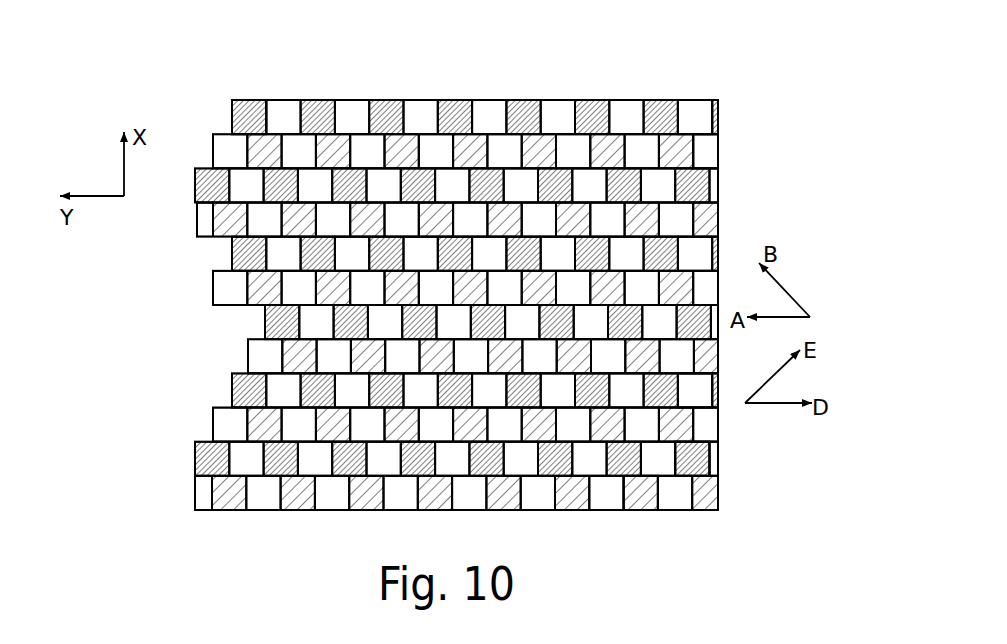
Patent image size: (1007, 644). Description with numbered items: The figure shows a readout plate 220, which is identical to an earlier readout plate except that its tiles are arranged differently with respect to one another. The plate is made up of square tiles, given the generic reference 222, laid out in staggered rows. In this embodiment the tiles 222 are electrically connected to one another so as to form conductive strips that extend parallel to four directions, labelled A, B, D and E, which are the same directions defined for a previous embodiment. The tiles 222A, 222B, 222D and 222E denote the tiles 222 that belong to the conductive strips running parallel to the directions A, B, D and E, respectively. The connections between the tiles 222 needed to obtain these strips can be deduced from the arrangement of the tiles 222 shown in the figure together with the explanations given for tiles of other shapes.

The readout plate 220 is at (492, 307).
The square tile 222 is at (245, 116).
The tile of conductive strip parallel to direction A 222A is at (696, 118).
The tile of conductive strip parallel to direction B 222B is at (703, 152).
The tile of conductive strip parallel to direction D 222D is at (687, 460).
The tile of conductive strip parallel to direction E 222E is at (640, 493).